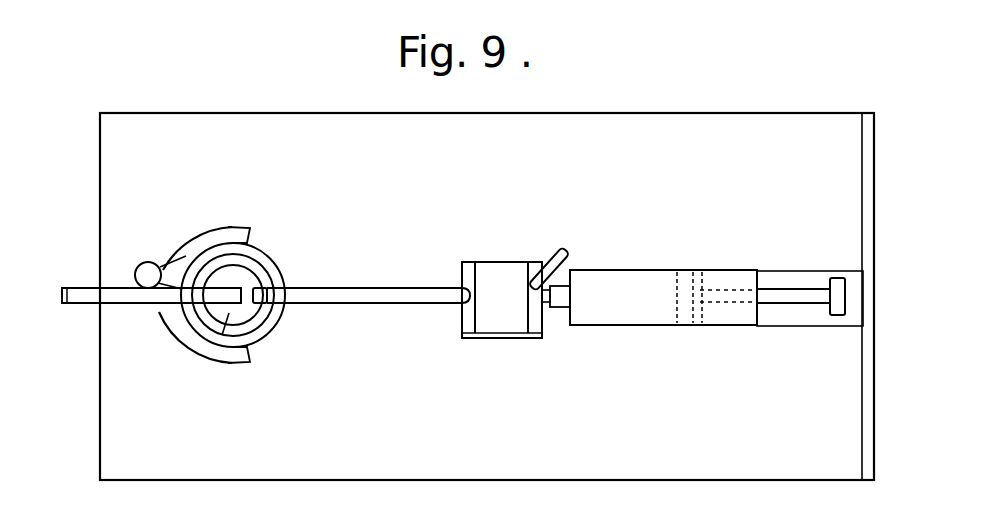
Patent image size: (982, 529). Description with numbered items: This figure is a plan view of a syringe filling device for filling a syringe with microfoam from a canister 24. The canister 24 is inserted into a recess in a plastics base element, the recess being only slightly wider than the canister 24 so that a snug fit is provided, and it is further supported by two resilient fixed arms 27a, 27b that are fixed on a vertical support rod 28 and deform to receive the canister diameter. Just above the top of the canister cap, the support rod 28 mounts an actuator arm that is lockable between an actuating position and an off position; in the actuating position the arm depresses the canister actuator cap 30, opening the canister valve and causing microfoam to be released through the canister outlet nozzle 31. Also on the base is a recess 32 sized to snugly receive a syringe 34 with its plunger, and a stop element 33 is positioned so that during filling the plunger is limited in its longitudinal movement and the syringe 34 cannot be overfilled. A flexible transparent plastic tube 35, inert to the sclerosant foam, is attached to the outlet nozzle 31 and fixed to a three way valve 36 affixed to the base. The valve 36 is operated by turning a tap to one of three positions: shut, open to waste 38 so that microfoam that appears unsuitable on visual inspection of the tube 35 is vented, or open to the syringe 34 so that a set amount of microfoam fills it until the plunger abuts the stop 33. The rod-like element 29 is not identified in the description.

The canister 24 is at (237, 256).
The resilient fixed arm 27a is at (187, 243).
The resilient fixed arm 27b is at (183, 341).
The vertical support rod 28 is at (140, 267).
The rod 29 is at (88, 304).
The canister actuator cap 30 is at (233, 368).
The canister outlet nozzle 31 is at (263, 289).
The recess 32 is at (803, 318).
The stop element 33 is at (862, 150).
The syringe 34 is at (662, 287).
The flexible transparent plastic tube 35 is at (329, 305).
The three way valve 36 is at (503, 318).
The waste 38 is at (547, 250).